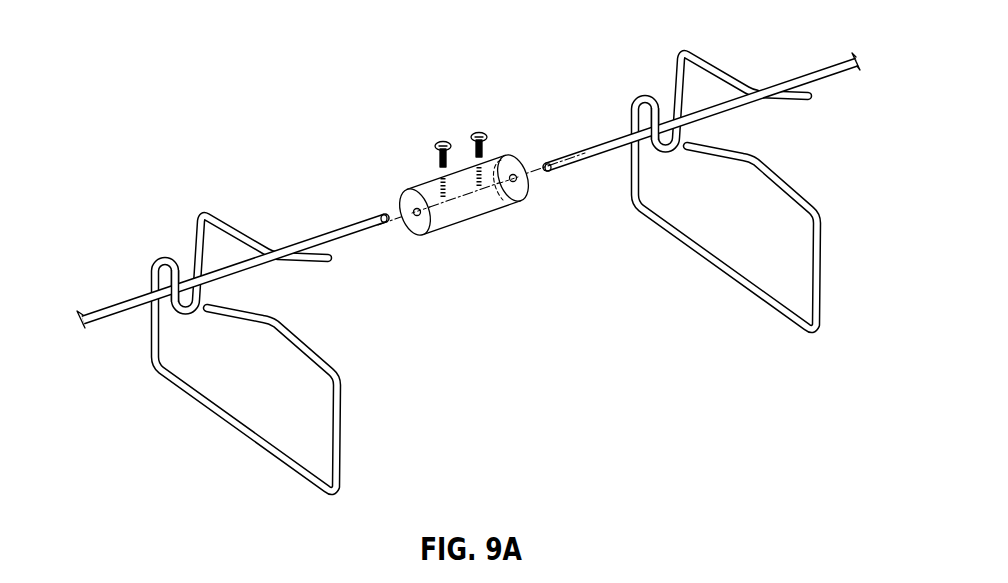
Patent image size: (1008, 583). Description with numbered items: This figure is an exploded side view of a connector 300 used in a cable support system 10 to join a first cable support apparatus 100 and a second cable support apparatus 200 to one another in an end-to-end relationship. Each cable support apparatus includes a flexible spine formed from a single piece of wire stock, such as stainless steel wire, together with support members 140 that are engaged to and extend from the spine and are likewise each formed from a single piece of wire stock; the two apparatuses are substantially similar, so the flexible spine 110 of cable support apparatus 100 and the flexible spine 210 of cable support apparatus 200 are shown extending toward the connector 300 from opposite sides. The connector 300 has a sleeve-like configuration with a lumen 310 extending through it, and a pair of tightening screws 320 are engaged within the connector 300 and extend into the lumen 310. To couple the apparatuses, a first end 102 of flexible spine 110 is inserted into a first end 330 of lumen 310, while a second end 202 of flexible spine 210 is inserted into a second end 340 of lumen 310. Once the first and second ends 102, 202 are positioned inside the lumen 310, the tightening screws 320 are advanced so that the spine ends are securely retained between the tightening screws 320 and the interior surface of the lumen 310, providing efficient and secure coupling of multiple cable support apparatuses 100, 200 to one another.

The cable support system 10 is at (268, 86).
The cable support apparatus 100 is at (185, 195).
The flexible spine 110 is at (132, 302).
The first end 102 is at (380, 212).
The support member 140 is at (352, 253).
The cable support apparatus 200 is at (635, 40).
The flexible spine 210 is at (828, 66).
The second end 202 is at (548, 170).
The connector 300 is at (419, 132).
The lumen 310 is at (470, 200).
The tightening screws 320 is at (478, 132).
The first end 330 is at (409, 206).
The second end 340 is at (523, 184).